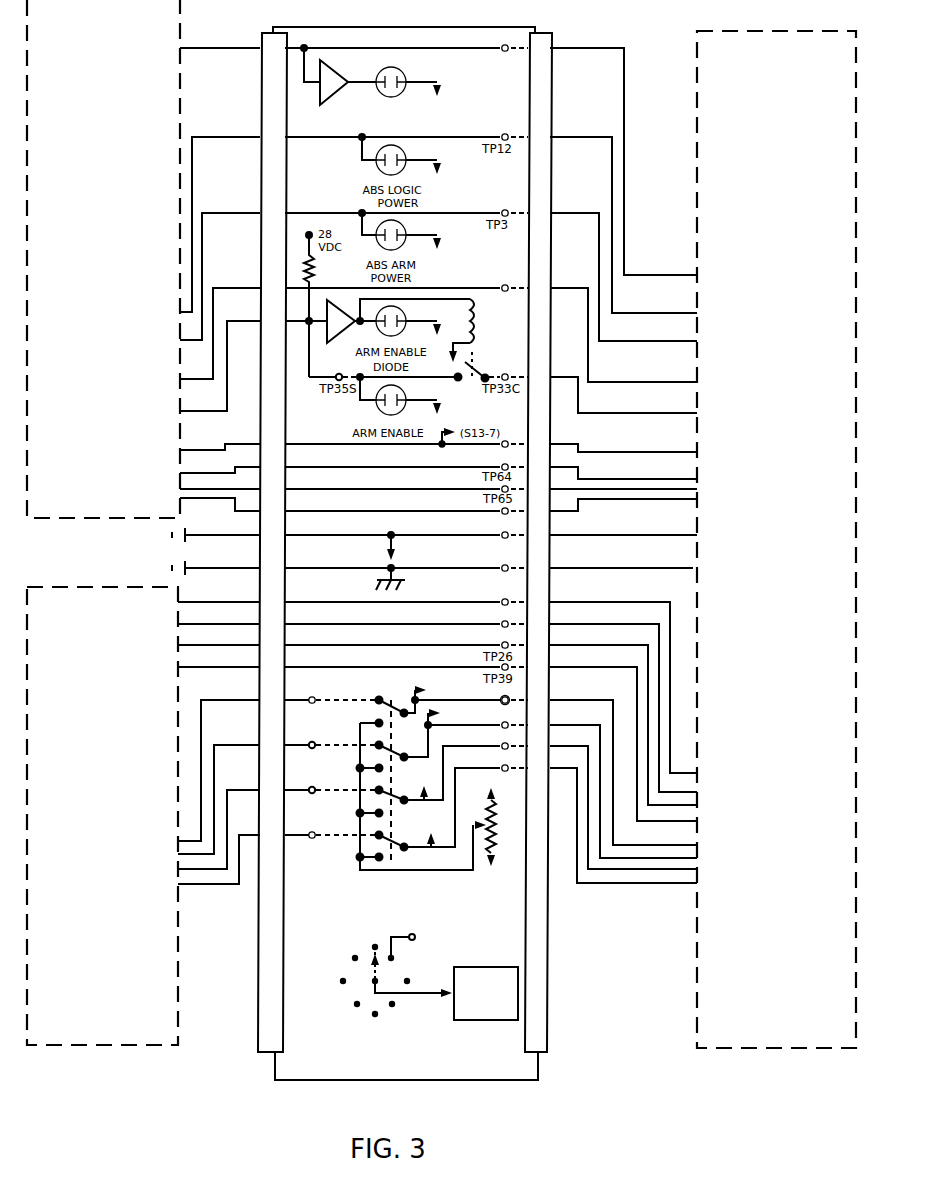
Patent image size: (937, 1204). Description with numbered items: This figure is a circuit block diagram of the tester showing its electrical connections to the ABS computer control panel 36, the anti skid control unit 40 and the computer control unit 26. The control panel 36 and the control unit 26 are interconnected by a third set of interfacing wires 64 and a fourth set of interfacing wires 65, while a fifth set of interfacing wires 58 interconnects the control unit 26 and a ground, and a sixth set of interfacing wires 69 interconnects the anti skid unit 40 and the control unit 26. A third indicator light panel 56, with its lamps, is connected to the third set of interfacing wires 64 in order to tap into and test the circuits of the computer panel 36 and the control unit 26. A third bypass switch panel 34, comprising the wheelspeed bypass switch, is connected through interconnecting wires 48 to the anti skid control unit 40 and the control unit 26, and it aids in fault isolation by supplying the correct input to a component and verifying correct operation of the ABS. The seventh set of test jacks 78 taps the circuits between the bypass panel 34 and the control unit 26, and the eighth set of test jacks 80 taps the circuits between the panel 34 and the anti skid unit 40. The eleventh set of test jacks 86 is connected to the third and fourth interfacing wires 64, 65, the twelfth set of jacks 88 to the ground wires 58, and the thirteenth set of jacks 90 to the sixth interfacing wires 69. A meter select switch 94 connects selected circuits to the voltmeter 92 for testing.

The computer control unit 26 is at (754, 197).
The computer control panel 36 is at (95, 112).
The anti skid control unit 40 is at (83, 667).
The third bypass switch panel 34 is at (366, 796).
The interconnecting wires 48 is at (337, 838).
The third indicator light panel 56 is at (408, 76).
The fifth set of interfacing wires 58 is at (420, 567).
The third set of interfacing wires 64 is at (440, 287).
The fourth set of interfacing wires 65 is at (447, 466).
The sixth set of interfacing wires 69 is at (406, 622).
The seventh set of test jacks 78 is at (510, 700).
The eighth set of test jacks 80 is at (310, 697).
The eleventh set of test jacks 86 is at (509, 45).
The twelfth set of test jacks 88 is at (510, 512).
The thirteenth set of test jacks 90 is at (510, 604).
The voltmeter 92 is at (519, 997).
The meter select switch 94 is at (365, 1014).